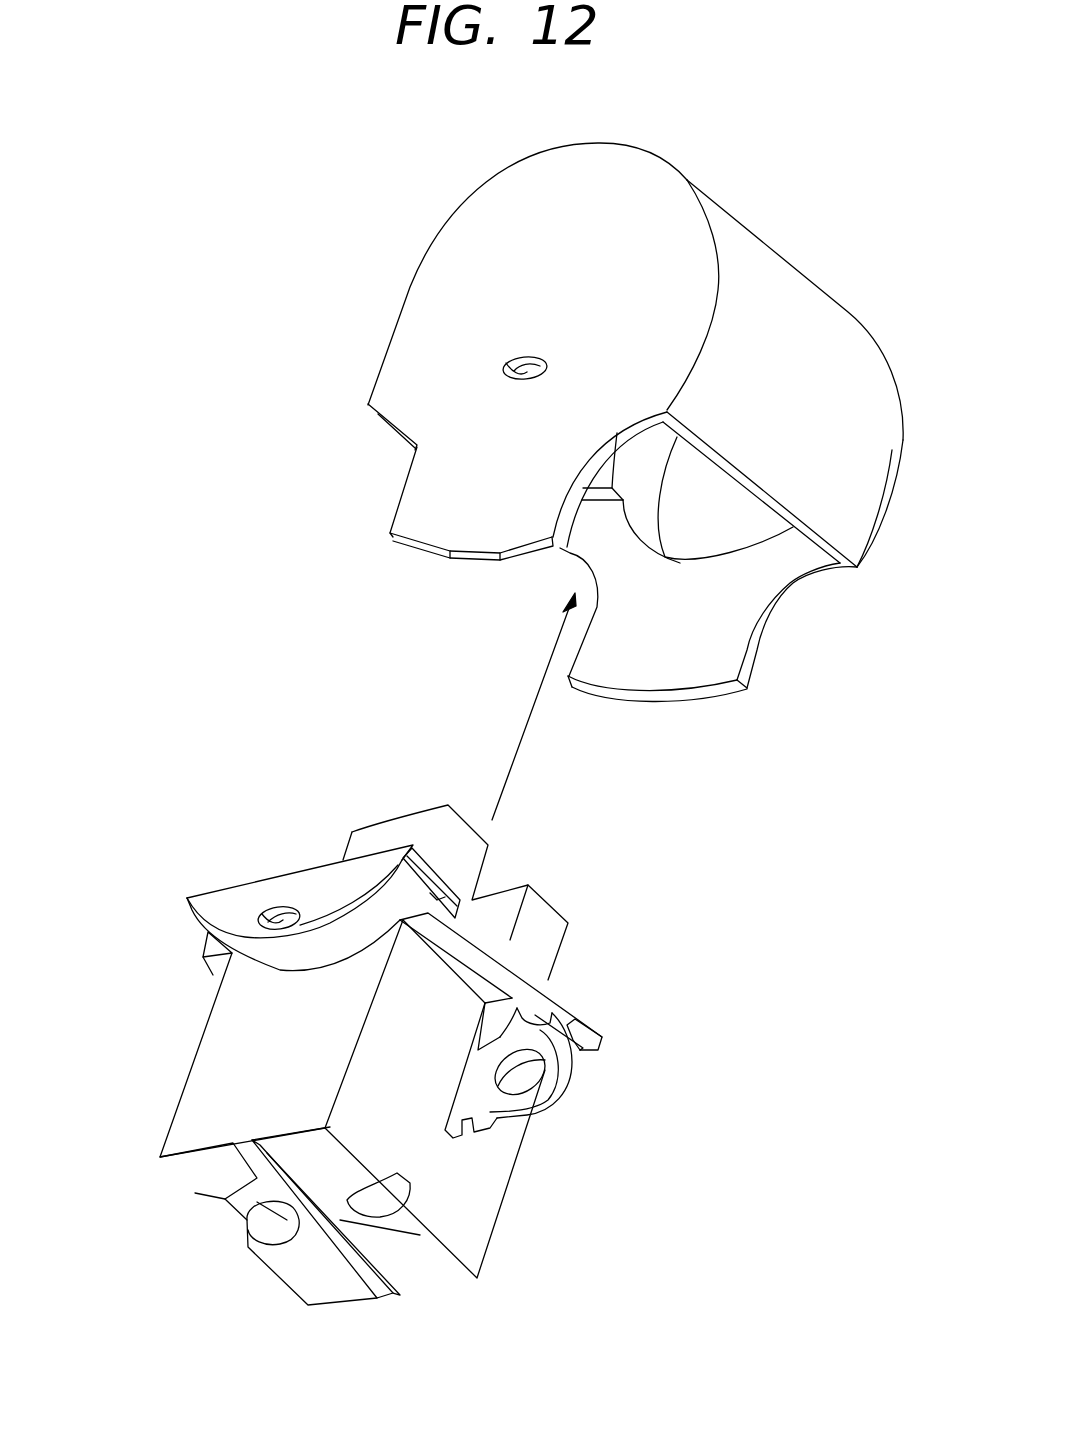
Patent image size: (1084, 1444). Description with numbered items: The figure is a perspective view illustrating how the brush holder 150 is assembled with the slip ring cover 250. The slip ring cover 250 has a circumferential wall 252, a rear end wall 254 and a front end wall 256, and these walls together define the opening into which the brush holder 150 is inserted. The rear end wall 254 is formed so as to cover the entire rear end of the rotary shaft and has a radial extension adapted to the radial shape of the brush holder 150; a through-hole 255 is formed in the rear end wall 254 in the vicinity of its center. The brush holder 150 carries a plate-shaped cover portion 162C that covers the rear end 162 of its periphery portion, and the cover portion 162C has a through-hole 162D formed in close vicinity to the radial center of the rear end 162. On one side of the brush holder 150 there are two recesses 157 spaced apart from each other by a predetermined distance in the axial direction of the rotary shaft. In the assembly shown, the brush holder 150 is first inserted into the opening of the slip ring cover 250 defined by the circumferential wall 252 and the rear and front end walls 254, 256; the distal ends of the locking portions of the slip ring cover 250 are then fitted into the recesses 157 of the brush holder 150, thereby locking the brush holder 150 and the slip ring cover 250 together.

The slip ring cover 250 is at (633, 170).
The circumferential wall 252 is at (820, 342).
The rear end wall 254 is at (437, 297).
The through-hole 255 is at (505, 361).
The front end wall 256 is at (727, 630).
The brush holder 150 is at (213, 1057).
The recesses 157 is at (487, 863).
The rear end 162 is at (227, 907).
The cover portion 162C is at (333, 880).
The through-hole 162D is at (265, 915).